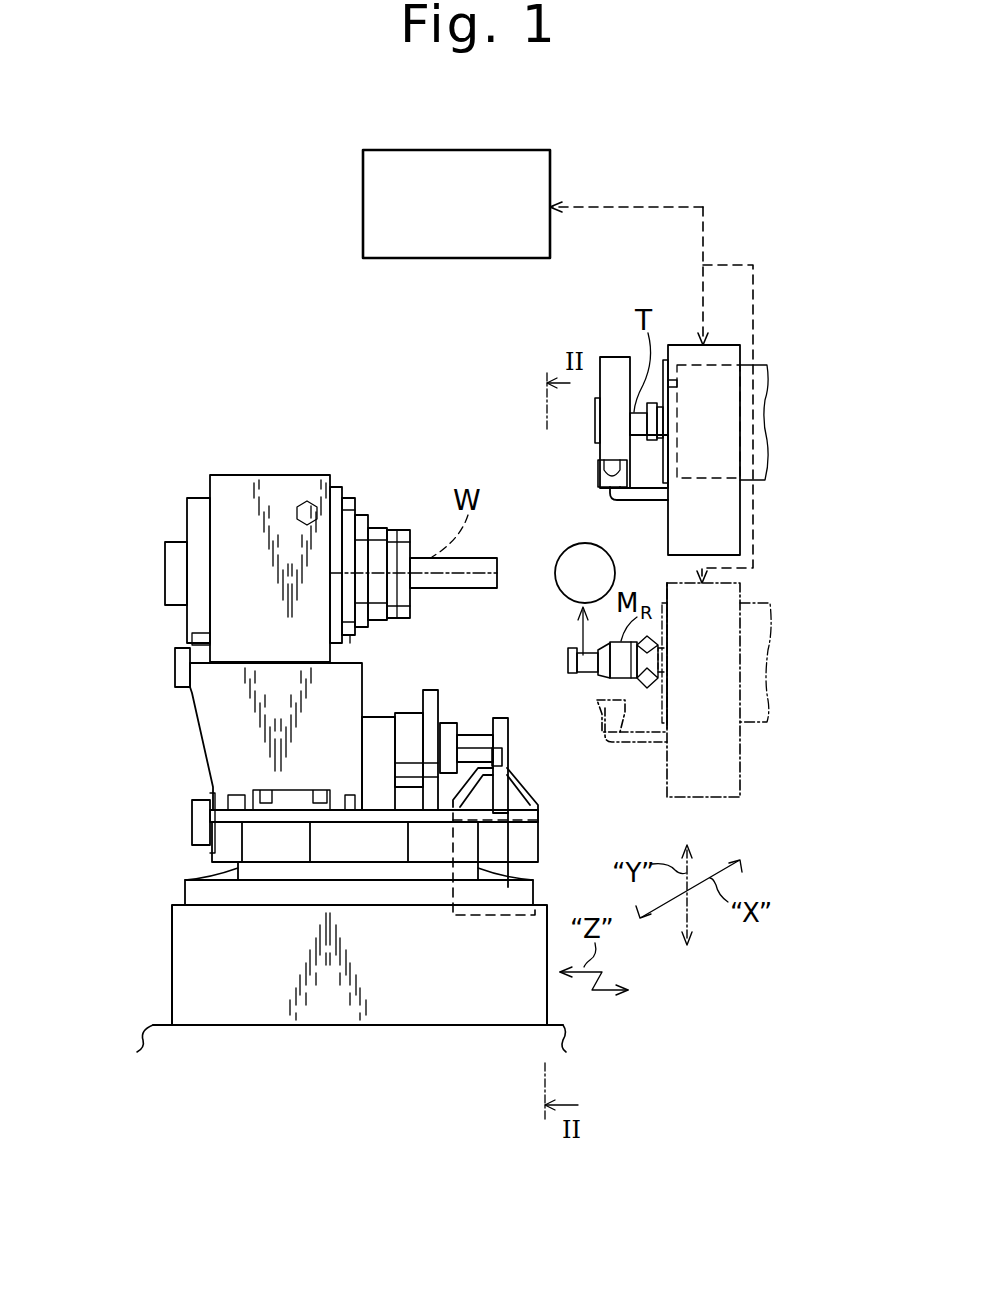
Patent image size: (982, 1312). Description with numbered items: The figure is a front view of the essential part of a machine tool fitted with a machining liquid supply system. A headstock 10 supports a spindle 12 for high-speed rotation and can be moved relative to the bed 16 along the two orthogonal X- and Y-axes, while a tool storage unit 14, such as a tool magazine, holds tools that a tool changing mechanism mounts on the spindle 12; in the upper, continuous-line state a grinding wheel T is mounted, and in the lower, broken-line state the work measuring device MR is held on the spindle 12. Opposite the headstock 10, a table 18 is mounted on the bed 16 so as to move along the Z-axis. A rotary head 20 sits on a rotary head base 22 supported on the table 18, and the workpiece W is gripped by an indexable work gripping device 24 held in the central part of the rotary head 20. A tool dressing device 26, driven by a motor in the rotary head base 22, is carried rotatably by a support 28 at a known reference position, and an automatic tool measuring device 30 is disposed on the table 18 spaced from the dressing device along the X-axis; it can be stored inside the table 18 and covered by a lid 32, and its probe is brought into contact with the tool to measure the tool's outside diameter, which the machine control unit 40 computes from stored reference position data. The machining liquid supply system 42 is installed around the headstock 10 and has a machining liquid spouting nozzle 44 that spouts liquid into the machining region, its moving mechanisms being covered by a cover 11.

The headstock 10 is at (728, 365).
The cover 11 is at (742, 598).
The spindle 12 is at (680, 378).
The tool storage unit 14 is at (457, 149).
The bed 16 is at (158, 1033).
The table 18 is at (195, 938).
The rotary head 20 is at (228, 520).
The rotary head base 22 is at (213, 720).
The work gripping device 24 is at (398, 533).
The tool dressing device 26 is at (433, 688).
The support 28 is at (502, 720).
The automatic tool measuring device 30 is at (500, 767).
The lid 32 is at (522, 805).
The machine control unit 40 is at (585, 599).
The machining liquid supply system 42 is at (638, 505).
The machining liquid spouting nozzle 44 is at (598, 468).